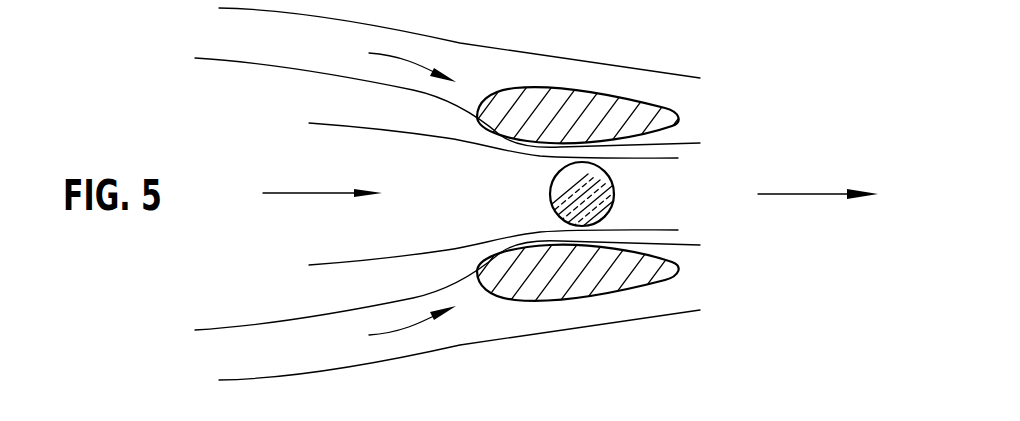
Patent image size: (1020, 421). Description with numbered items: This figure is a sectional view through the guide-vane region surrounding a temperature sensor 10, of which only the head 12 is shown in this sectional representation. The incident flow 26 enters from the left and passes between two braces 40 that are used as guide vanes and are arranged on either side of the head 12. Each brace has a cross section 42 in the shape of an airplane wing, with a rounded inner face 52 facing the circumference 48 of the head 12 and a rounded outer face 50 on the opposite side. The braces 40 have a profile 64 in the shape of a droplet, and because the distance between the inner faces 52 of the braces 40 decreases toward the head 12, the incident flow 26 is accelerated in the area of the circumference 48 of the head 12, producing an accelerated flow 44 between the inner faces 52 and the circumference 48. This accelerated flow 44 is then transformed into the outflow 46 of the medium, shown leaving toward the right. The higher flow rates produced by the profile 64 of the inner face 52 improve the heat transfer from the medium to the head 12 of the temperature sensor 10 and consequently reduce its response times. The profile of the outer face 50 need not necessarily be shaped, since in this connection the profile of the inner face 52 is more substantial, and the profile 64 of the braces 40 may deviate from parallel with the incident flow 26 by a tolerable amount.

The temperature sensor 10 is at (645, 202).
The head 12 is at (613, 178).
The incident flow 26 is at (318, 193).
The braces 40 is at (525, 108).
The cross section 42 is at (627, 120).
The accelerated flow 44 is at (578, 153).
The outflow 46 is at (815, 193).
The circumference 48 is at (613, 203).
The outer face 50 is at (593, 92).
The inner face 52 is at (547, 243).
The profile 64 is at (396, 194).